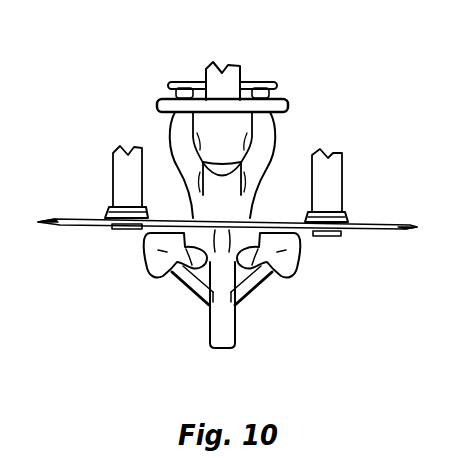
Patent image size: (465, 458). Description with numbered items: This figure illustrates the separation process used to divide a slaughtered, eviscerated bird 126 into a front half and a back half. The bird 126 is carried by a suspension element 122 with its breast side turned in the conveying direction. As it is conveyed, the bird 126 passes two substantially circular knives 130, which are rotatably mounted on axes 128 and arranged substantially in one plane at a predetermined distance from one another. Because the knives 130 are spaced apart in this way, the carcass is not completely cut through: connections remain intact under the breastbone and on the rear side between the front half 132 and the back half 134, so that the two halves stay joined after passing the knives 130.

The suspension element 122 is at (222, 82).
The bird 126 is at (227, 206).
The axes 128 is at (125, 183).
The circular knives 130 is at (70, 227).
The front half 132 is at (204, 298).
The back half 134 is at (250, 175).